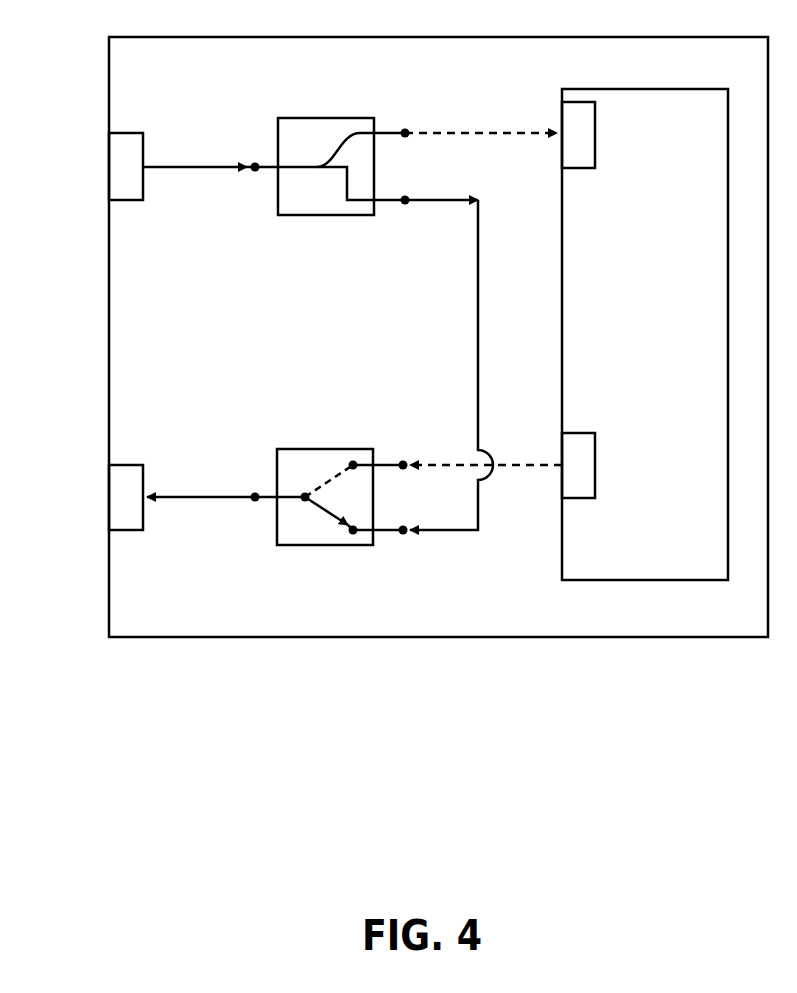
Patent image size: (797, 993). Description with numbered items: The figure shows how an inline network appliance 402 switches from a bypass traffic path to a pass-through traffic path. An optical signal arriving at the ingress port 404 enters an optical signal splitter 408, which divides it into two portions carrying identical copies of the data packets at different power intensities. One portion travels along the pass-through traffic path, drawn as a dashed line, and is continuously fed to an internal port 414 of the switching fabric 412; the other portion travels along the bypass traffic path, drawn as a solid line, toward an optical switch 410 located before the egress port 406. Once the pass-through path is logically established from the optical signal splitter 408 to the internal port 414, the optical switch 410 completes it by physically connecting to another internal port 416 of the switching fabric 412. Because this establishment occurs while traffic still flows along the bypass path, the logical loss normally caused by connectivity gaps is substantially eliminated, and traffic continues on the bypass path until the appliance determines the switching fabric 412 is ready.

The inline network appliance 402 is at (438, 337).
The ingress port 404 is at (84, 165).
The egress port 406 is at (85, 500).
The optical signal splitter 408 is at (318, 220).
The optical switch 410 is at (321, 447).
The switching fabric 412 is at (645, 334).
The internal port 414 is at (597, 142).
The internal port 416 is at (600, 467).